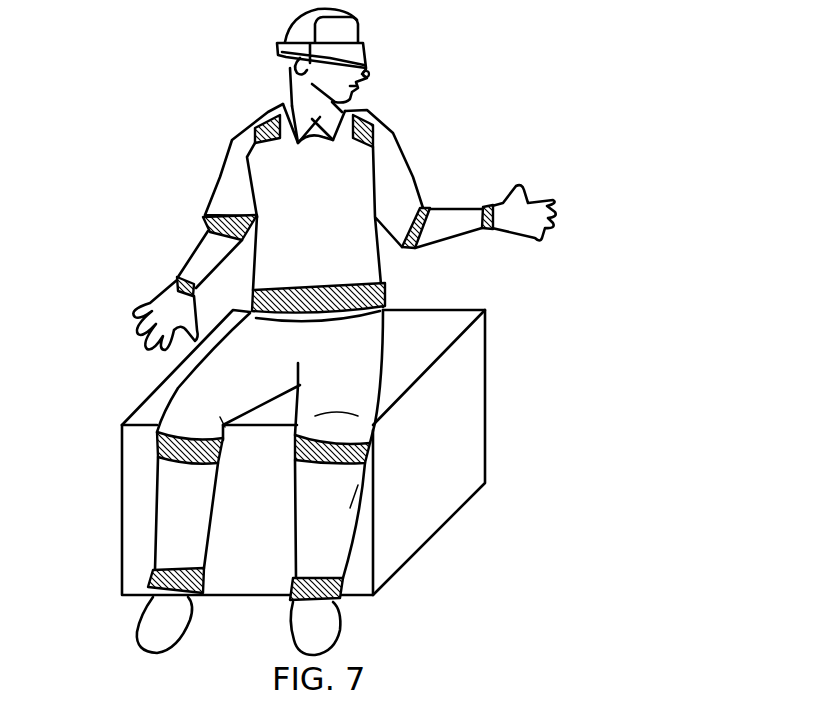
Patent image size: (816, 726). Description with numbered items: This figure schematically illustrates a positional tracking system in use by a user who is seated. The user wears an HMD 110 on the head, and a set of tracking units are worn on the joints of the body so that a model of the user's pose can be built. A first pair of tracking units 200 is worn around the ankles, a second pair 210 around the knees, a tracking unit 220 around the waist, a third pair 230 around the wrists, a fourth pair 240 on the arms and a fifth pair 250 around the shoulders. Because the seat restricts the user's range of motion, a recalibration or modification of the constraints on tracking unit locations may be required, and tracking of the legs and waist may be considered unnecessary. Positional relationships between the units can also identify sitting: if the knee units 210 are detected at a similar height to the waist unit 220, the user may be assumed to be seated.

The HMD 110 is at (362, 43).
The first pair of tracking units 200 is at (203, 578).
The second pair of tracking units 210 is at (293, 452).
The tracking unit 220 is at (385, 295).
The third pair of tracking units 230 is at (180, 280).
The fourth pair of tracking units 240 is at (205, 227).
The fifth pair of tracking units 250 is at (270, 120).